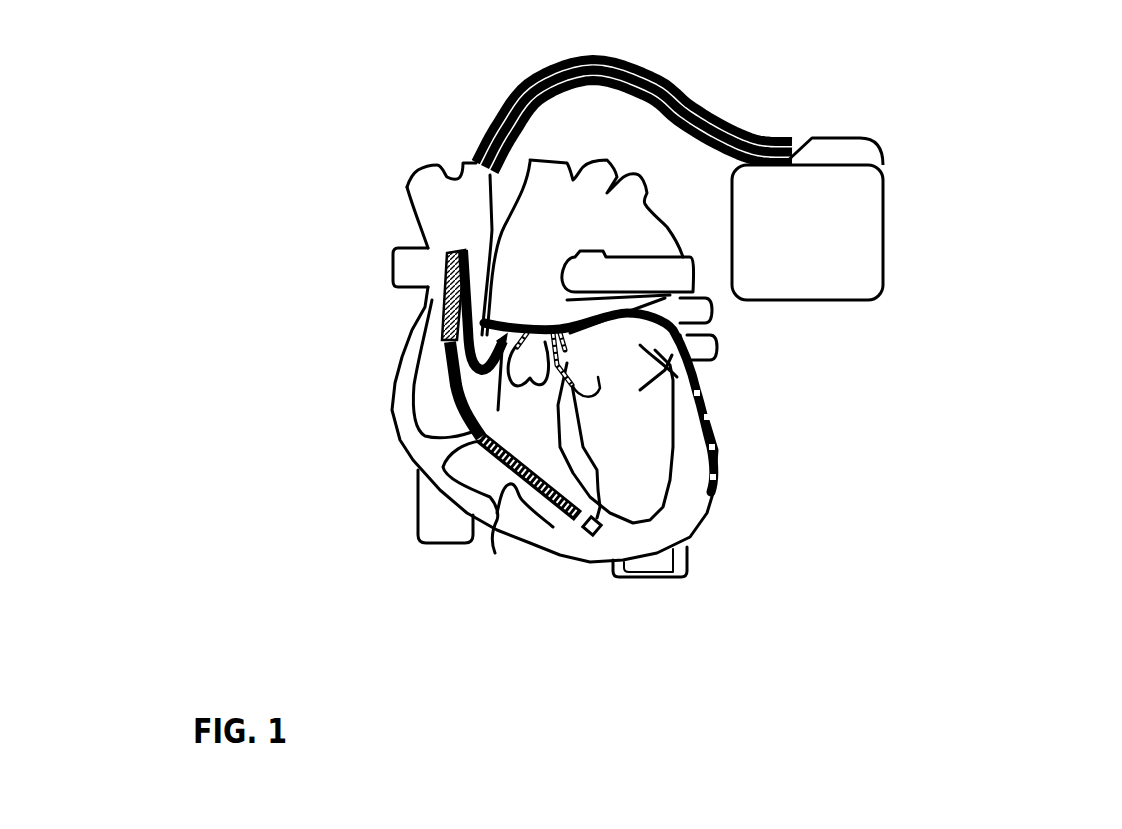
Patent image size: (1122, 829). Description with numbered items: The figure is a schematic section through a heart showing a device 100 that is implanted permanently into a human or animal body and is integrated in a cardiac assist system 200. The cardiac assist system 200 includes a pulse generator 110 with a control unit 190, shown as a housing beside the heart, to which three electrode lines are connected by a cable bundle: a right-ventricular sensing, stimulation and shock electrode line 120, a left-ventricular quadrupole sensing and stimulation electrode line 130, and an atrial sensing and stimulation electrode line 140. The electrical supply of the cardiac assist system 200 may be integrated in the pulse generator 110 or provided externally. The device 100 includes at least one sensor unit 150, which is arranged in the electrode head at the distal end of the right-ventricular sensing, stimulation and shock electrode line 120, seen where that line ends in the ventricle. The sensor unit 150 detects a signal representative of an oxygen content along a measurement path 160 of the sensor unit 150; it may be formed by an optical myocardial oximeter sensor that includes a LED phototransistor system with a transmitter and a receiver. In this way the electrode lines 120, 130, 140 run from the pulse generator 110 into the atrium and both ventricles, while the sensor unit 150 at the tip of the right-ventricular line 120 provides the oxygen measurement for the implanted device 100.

The cardiac assist system 200 is at (789, 213).
The device 100 is at (681, 431).
The pulse generator 110 is at (854, 276).
The control unit 190 is at (805, 268).
The right-ventricular sensing, stimulation and shock electrode line 120 is at (497, 488).
The left-ventricular quadrupole sensing and stimulation electrode line 130 is at (713, 440).
The atrial sensing and stimulation electrode line 140 is at (447, 348).
The sensor unit 150 is at (775, 564).
The measurement path 160 is at (603, 533).